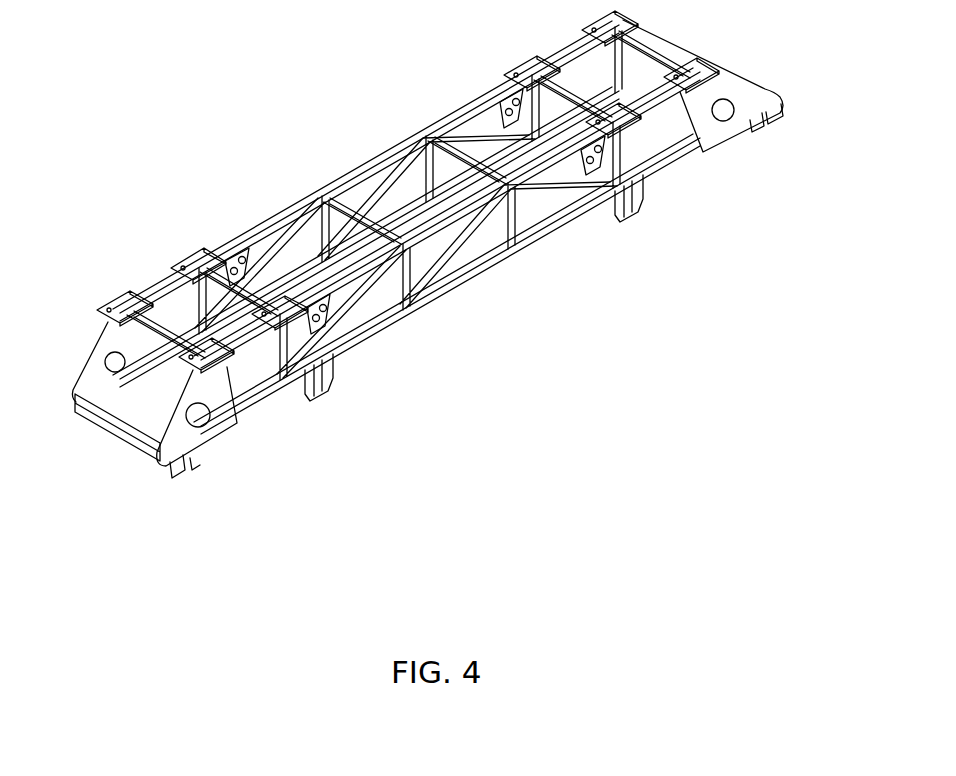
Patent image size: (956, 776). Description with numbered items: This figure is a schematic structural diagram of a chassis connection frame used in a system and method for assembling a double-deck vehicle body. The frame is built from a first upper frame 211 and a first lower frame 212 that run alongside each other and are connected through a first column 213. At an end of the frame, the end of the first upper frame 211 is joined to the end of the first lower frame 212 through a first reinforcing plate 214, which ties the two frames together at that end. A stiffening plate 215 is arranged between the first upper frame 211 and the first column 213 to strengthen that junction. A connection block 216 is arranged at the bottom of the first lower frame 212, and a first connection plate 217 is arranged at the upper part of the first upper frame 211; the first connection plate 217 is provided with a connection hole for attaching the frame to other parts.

The first upper frame 211 is at (380, 158).
The first lower frame 212 is at (460, 286).
The first column 213 is at (522, 243).
The first reinforcing plate 214 is at (177, 430).
The stiffening plate 215 is at (648, 198).
The connection block 216 is at (322, 397).
The first connection plate 217 is at (186, 262).